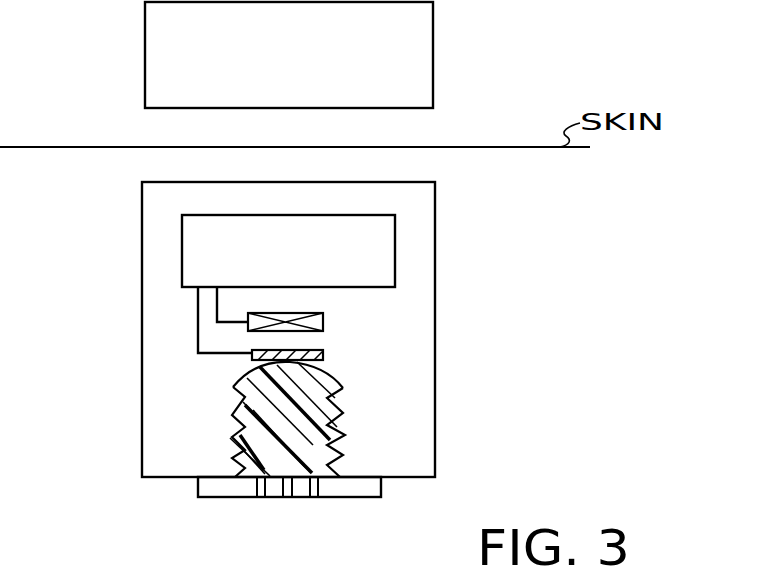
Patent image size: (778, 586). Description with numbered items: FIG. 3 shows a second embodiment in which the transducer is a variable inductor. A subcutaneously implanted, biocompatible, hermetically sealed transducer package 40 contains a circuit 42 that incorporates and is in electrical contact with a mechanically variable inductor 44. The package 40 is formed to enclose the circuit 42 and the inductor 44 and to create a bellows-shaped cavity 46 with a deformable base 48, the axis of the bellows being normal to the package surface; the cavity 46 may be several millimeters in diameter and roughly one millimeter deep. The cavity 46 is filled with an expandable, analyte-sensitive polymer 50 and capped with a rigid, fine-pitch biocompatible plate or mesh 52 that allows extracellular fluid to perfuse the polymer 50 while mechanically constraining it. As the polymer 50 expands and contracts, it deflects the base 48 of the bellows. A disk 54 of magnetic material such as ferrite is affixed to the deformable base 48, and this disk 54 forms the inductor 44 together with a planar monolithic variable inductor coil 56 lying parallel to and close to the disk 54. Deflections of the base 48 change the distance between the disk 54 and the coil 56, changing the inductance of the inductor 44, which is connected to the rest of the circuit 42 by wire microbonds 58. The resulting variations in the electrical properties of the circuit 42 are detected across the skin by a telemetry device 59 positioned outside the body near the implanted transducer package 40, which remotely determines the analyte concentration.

The transducer package 40 is at (142, 240).
The circuit 42 is at (395, 248).
The mechanically variable inductor 44 is at (345, 343).
The bellows-shaped cavity 46 is at (345, 447).
The deformable base 48 is at (237, 376).
The expandable polymer 50 is at (240, 432).
The plate or mesh 52 is at (236, 498).
The disk of magnetic material 54 is at (323, 352).
The planar monolithic variable inductor coil 56 is at (323, 313).
The wire microbonds 58 is at (217, 316).
The telemetry device 59 is at (433, 70).